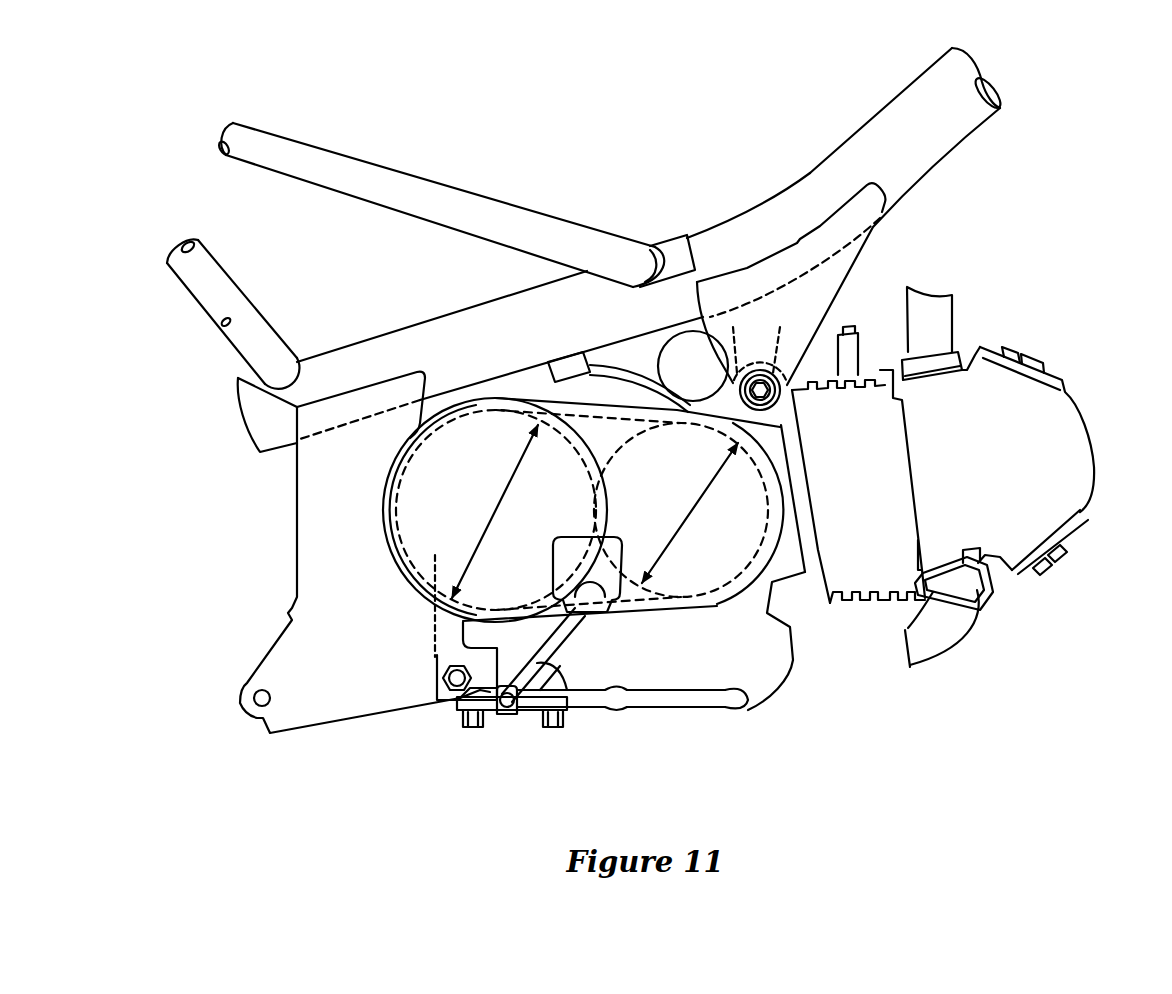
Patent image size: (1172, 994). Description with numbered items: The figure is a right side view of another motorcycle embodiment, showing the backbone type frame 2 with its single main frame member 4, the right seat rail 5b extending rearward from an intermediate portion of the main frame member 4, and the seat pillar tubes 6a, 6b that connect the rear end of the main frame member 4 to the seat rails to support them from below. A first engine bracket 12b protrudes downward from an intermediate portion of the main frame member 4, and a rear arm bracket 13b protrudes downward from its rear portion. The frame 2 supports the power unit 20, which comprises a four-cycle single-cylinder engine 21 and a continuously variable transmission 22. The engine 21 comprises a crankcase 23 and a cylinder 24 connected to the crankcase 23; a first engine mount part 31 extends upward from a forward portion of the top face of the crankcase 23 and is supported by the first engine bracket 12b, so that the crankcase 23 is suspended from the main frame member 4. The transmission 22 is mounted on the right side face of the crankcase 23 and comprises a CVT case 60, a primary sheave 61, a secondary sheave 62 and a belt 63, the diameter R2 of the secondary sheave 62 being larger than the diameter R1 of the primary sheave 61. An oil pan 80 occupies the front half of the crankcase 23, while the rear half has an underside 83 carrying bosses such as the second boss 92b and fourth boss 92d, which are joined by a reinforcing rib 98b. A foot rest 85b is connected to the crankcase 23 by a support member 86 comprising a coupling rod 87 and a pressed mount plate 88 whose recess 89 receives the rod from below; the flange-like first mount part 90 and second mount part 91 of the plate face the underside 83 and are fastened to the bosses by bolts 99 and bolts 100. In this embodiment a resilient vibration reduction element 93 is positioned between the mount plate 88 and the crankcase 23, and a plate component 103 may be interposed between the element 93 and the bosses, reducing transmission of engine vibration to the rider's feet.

The frame 2 is at (893, 88).
The main frame member 4 is at (770, 217).
The seat rail 5b is at (460, 203).
The seat pillar tube 6a is at (216, 292).
The seat pillar tube 6b is at (270, 350).
The first engine bracket 12b is at (837, 282).
The rear arm bracket 13b is at (312, 525).
The power unit 20 is at (990, 295).
The engine 21 is at (1090, 366).
The continuously variable transmission 22 is at (487, 405).
The crankcase 23 is at (790, 668).
The cylinder 24 is at (880, 575).
The first engine mount part 31 is at (771, 357).
The CVT case 60 is at (782, 481).
The primary sheave 61 is at (715, 588).
The secondary sheave 62 is at (412, 582).
The belt 63 is at (638, 447).
The oil pan 80 is at (700, 697).
The underside 83 is at (462, 660).
The foot rest 85b is at (570, 550).
The support member 86 is at (505, 732).
The coupling rod 87 is at (545, 632).
The mount plate 88 is at (540, 728).
The recess 89 is at (505, 735).
The first mount part 90 is at (575, 702).
The second mount part 91 is at (473, 716).
The second boss 92b is at (555, 688).
The fourth boss 92d is at (465, 690).
The vibration reduction element 93 is at (462, 708).
The reinforcing rib 98b is at (445, 680).
The bolt 99 is at (560, 712).
The bolt 100 is at (474, 728).
The plate component 103 is at (500, 727).
The diameter of the primary sheave R1 is at (690, 516).
The diameter of the secondary sheave R2 is at (493, 512).